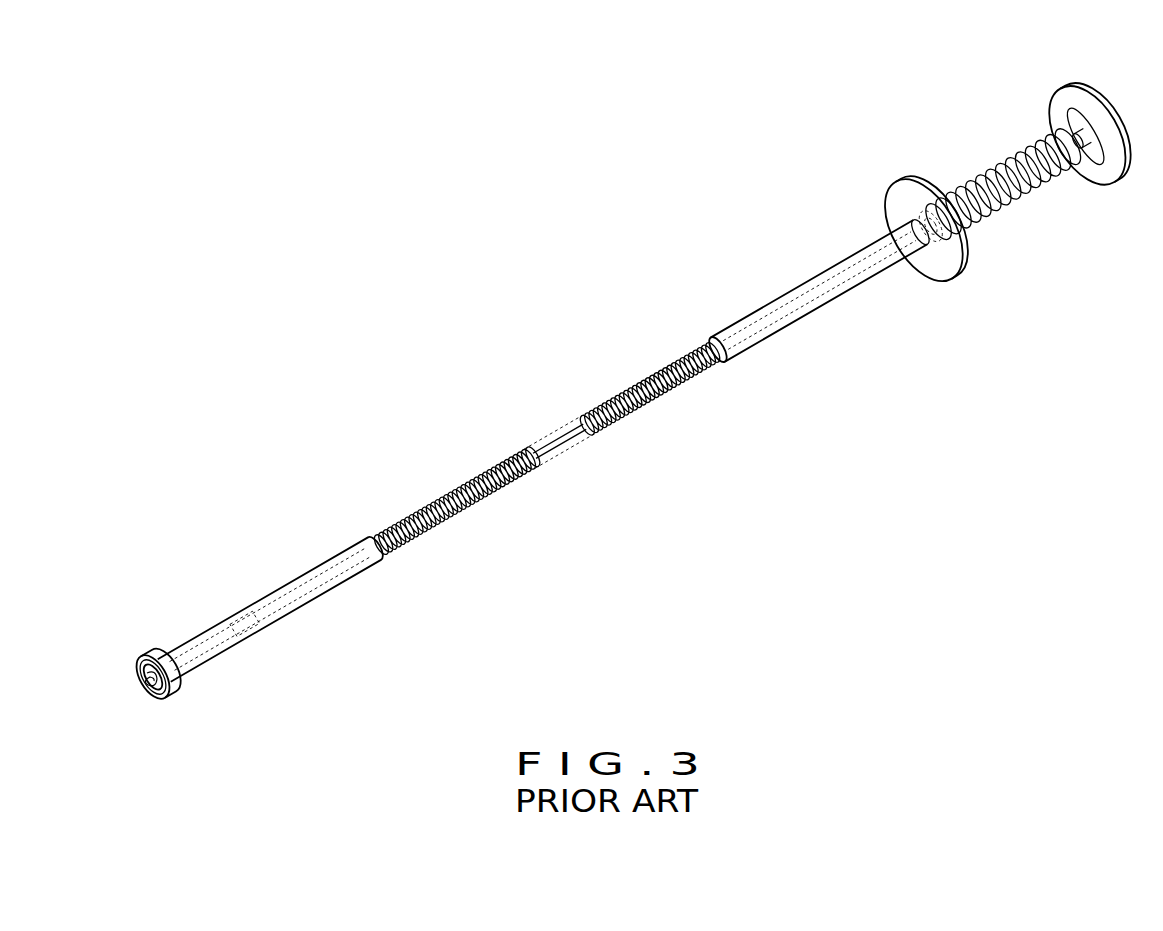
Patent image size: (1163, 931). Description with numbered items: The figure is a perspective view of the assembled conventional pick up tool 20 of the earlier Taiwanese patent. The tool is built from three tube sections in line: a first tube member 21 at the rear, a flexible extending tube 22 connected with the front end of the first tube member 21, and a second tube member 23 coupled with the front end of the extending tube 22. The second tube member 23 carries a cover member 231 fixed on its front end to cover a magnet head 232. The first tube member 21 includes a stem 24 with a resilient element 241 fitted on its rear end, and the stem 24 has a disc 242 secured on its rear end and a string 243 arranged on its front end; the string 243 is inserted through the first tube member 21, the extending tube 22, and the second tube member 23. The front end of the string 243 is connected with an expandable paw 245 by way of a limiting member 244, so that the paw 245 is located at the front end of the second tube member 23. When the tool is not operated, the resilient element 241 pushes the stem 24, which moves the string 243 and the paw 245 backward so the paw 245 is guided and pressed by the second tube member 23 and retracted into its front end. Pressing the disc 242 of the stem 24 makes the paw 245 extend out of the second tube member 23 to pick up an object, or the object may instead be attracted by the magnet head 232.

The pick up tool 20 is at (606, 409).
The first tube member 21 is at (813, 277).
The flexible extending tube 22 is at (641, 382).
The second tube member 23 is at (288, 581).
The cover member 231 is at (149, 656).
The magnet head 232 is at (133, 668).
The stem 24 is at (1076, 113).
The resilient element 241 is at (1003, 219).
The disc 242 is at (1115, 182).
The string 243 is at (580, 436).
The limiting member 244 is at (258, 641).
The expandable paw 245 is at (153, 701).